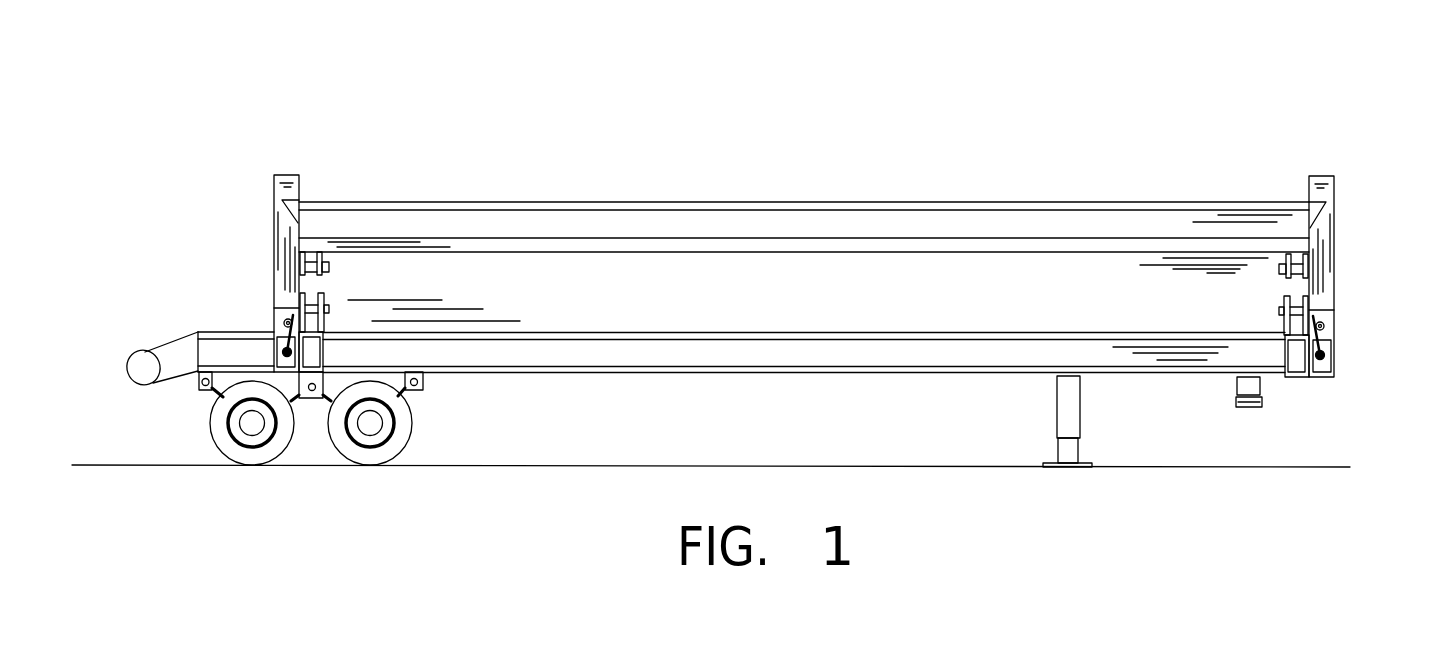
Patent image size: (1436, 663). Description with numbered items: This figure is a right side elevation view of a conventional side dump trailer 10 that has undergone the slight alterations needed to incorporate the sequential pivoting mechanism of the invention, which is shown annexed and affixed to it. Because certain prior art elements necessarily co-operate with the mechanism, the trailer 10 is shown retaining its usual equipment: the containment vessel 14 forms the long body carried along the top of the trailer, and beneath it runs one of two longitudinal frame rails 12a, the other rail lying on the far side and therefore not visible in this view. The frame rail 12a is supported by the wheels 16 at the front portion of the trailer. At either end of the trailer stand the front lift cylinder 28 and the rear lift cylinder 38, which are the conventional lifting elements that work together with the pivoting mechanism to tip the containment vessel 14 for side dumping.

The side dump trailer 10 is at (773, 165).
The containment vessel 14 is at (633, 205).
The longitudinal frame rail 12a is at (697, 354).
The wheels 16 is at (412, 418).
The rear lift cylinder 38 is at (273, 243).
The front lift cylinder 28 is at (1336, 262).